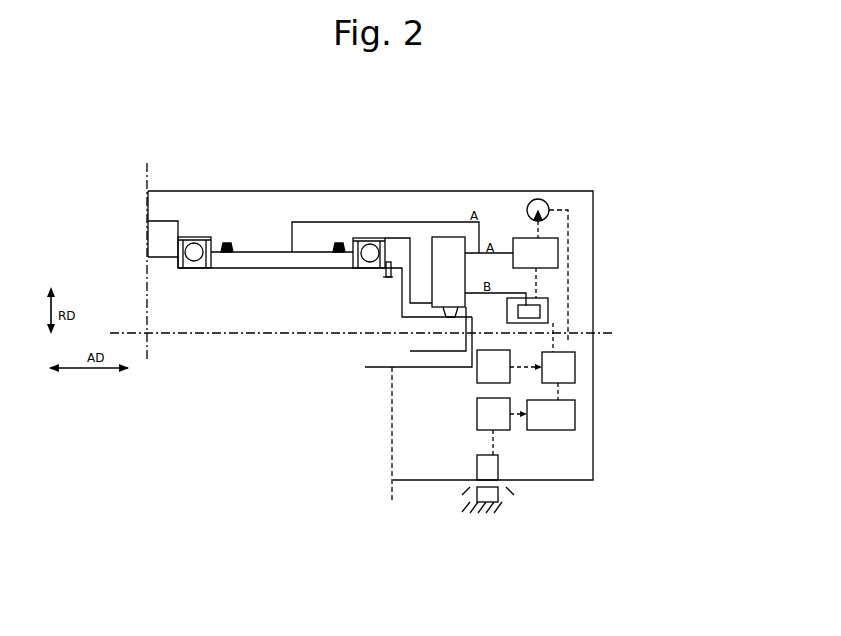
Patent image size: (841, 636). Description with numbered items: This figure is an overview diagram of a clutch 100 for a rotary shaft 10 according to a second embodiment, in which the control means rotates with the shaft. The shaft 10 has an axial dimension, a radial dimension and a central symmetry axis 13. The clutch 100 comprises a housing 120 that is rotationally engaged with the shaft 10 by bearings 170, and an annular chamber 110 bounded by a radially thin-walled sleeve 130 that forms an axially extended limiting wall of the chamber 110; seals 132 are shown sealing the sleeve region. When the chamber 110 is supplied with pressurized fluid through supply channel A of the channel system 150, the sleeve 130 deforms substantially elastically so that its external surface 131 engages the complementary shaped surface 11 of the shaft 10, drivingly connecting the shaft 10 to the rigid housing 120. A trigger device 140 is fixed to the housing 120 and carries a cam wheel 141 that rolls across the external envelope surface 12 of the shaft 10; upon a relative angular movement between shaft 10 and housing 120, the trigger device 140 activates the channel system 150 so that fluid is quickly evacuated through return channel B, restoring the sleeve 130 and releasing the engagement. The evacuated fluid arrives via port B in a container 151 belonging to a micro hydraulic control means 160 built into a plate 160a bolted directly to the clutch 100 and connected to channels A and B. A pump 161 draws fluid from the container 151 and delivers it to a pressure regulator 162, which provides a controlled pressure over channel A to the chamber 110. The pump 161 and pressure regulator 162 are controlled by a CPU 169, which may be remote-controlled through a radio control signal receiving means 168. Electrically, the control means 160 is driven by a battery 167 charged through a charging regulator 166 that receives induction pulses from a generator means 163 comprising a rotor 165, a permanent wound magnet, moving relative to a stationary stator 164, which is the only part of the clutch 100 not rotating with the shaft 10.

The clutch 100 is at (119, 137).
The rotary shaft 10 is at (174, 351).
The complementary shaped surface 11 is at (233, 270).
The envelope surface 12 is at (430, 317).
The central symmetry axis 13 is at (629, 339).
The annular chamber 110 is at (258, 252).
The housing 120 is at (210, 203).
The sleeve 130 is at (277, 270).
The external surface 131 is at (253, 270).
The seals 132 is at (227, 247).
The trigger device 140 is at (418, 302).
The cam wheel 141 is at (447, 310).
The channel system 150 is at (507, 184).
The container 151 is at (548, 313).
The control means 160 is at (620, 373).
The plate 160a is at (593, 403).
The pump 161 is at (550, 202).
The pressure regulator 162 is at (535, 253).
The generator means 163 is at (498, 460).
The stator 164 is at (510, 500).
The rotor 165 is at (500, 467).
The charging regulator 166 is at (493, 414).
The battery 167 is at (551, 415).
The radio control signal receiving means 168 is at (493, 366).
The CPU 169 is at (558, 367).
The bearings 170 is at (178, 267).